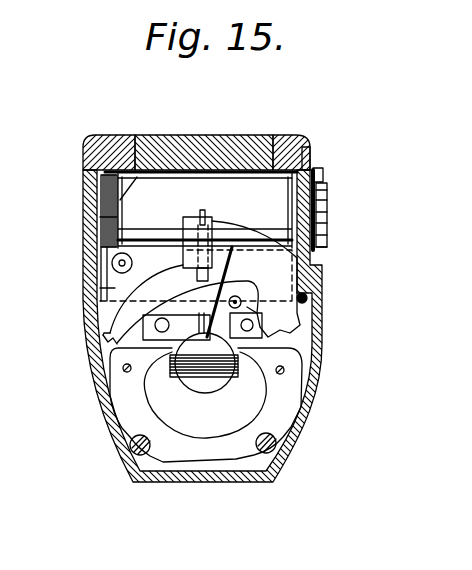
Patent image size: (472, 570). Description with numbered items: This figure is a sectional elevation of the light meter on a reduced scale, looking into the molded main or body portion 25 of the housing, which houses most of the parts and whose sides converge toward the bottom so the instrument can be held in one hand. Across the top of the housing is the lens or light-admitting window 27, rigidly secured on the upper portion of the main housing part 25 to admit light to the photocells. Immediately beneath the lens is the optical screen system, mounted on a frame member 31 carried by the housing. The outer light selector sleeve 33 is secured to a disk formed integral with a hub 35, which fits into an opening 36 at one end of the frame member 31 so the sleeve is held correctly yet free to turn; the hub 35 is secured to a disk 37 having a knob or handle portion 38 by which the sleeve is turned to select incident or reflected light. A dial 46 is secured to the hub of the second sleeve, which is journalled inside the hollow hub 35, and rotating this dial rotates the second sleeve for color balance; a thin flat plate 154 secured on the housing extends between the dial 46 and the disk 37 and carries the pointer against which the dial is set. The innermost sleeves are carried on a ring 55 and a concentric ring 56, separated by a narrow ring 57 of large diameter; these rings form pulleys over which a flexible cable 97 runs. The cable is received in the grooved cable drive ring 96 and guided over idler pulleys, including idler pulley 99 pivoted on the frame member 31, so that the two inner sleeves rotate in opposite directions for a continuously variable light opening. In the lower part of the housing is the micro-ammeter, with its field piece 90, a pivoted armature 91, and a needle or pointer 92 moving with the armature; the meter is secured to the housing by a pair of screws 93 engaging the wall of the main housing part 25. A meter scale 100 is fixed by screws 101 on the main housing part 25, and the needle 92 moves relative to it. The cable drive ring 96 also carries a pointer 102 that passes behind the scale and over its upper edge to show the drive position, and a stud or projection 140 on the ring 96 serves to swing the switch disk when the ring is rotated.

The main or body portion 25 is at (113, 135).
The lens or light-admitting window 27 is at (228, 140).
The light selector sleeve 33 is at (217, 127).
The knob or handle portion 38 is at (313, 147).
The disk 37 is at (314, 157).
The flat plate 154 is at (326, 173).
The dial 46 is at (319, 195).
The opening 36 is at (316, 210).
The hub 35 is at (316, 235).
The ring 55 is at (100, 193).
The narrow ring 57 is at (100, 217).
The concentric ring 56 is at (137, 177).
The meter scale 100 is at (250, 230).
The idler pulley 99 is at (133, 253).
The pointer 102 is at (220, 200).
The flexible cable 97 is at (103, 303).
The frame member 31 is at (110, 287).
The cable drive ring 96 is at (110, 330).
The needle or pointer 92 is at (233, 260).
The stud or projection 140 is at (305, 345).
The screws 101 is at (306, 301).
The field piece 90 is at (274, 403).
The armature 91 is at (190, 383).
The screws 93 is at (120, 457).